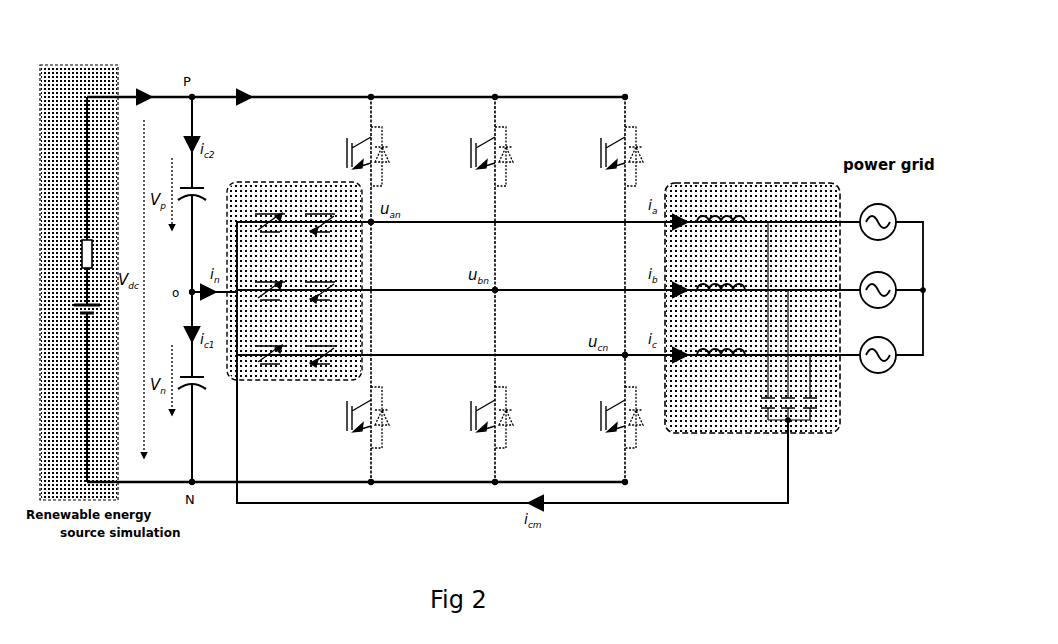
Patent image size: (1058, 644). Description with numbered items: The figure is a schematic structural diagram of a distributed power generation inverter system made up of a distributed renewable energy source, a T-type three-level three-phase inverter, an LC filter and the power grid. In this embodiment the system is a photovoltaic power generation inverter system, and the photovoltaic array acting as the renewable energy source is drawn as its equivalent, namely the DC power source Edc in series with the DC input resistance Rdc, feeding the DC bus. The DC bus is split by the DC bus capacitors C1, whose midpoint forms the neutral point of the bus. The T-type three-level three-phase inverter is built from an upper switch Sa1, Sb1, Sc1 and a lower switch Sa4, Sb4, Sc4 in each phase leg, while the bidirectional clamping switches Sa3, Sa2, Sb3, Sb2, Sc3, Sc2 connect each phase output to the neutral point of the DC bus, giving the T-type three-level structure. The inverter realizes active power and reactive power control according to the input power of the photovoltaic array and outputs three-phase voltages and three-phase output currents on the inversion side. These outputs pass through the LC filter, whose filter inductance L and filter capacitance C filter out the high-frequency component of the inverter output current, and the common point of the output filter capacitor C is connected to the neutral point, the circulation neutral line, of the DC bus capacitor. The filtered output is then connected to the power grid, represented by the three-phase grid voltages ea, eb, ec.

The DC input resistance Rdc is at (79, 282).
The DC power source Edc is at (72, 316).
The DC-link split capacitors C1 is at (200, 289).
The phase a upper switch Sa1 is at (347, 154).
The phase b upper switch Sb1 is at (471, 154).
The phase c upper switch Sc1 is at (601, 154).
The phase a lower switch Sa4 is at (347, 416).
The phase b lower switch Sb4 is at (471, 416).
The phase c lower switch Sc4 is at (601, 416).
The phase a neutral-point clamping switch Sa3 is at (270, 207).
The phase a neutral-point clamping switch Sa2 is at (320, 209).
The phase b neutral-point clamping switch Sb3 is at (270, 277).
The phase b neutral-point clamping switch Sb2 is at (320, 279).
The phase c neutral-point clamping switch Sc3 is at (270, 341).
The phase c neutral-point clamping switch Sc2 is at (320, 342).
The filter inductance L is at (721, 272).
The filter capacitance C is at (774, 322).
The three-phase grid voltage ea is at (878, 211).
The three-phase grid voltage eb is at (878, 280).
The three-phase grid voltage ec is at (878, 345).